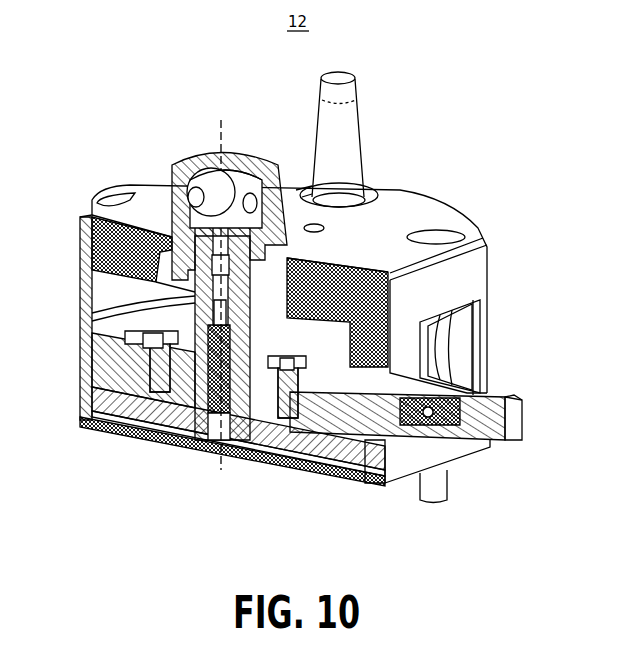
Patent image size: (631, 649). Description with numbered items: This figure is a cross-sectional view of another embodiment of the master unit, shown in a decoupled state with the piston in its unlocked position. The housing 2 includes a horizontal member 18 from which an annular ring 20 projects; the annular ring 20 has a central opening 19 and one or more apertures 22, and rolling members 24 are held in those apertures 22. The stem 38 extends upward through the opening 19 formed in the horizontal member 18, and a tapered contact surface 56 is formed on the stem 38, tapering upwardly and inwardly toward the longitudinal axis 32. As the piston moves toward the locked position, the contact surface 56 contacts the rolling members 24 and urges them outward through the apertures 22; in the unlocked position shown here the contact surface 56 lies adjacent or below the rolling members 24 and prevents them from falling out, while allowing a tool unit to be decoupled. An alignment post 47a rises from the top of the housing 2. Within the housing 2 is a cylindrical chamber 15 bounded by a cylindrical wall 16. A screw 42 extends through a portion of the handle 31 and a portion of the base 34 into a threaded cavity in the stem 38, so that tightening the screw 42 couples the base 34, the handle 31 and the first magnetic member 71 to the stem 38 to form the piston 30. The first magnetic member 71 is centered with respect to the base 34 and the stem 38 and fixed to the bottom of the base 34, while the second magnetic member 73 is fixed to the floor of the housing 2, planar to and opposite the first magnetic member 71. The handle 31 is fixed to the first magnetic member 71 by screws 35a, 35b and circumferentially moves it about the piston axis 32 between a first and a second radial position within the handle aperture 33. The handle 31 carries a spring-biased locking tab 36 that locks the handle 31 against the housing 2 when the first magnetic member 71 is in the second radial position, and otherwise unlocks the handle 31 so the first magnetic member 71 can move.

The housing 2 is at (477, 280).
The horizontal member 18 is at (84, 222).
The stem 38 is at (92, 246).
The chamber 15 is at (105, 290).
The base 34 is at (85, 352).
The cylindrical wall 16 is at (86, 384).
The first magnetic member 71 is at (90, 402).
The second magnetic member 73 is at (84, 424).
The screw 35a is at (132, 420).
The screw 35b is at (318, 470).
The piston 30 is at (212, 438).
The screw 42 is at (250, 448).
The apertures 22 is at (208, 152).
The annular ring 20 is at (174, 186).
The longitudinal axis 32 is at (222, 150).
The central opening 19 is at (238, 160).
The alignment post 47a is at (348, 105).
The rolling members 24 is at (316, 196).
The contact surface 56 is at (312, 188).
The handle aperture 33 is at (432, 353).
The handle 31 is at (497, 396).
The locking tab 36 is at (410, 422).